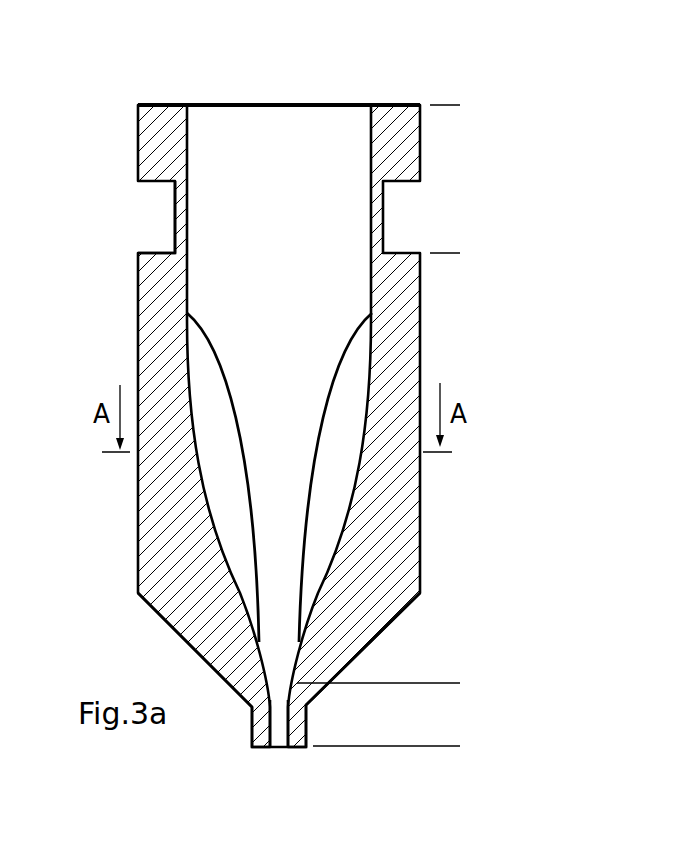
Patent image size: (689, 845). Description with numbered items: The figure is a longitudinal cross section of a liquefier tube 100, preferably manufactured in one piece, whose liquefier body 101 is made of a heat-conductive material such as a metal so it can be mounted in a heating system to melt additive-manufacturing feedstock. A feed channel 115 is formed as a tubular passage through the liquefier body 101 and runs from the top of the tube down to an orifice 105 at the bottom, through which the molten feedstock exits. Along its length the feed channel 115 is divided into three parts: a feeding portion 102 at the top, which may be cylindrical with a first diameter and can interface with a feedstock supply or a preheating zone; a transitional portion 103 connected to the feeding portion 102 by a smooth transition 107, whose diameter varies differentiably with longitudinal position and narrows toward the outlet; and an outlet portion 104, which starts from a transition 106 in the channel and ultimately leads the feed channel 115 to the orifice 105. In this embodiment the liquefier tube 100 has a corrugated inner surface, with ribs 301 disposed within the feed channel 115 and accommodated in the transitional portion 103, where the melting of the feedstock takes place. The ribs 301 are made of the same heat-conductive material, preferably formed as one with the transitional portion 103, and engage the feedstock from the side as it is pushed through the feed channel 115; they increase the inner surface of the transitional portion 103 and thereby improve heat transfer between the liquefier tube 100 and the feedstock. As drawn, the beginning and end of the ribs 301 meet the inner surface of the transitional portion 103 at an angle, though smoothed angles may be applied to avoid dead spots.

The liquefier tube 100 is at (130, 88).
The liquefier body 101 is at (162, 355).
The feeding portion 102 is at (478, 105).
The transitional portion 103 is at (478, 253).
The outlet portion 104 is at (478, 683).
The orifice 105 is at (282, 735).
The transition 106 is at (255, 712).
The smooth transition 107 is at (168, 261).
The feed channel 115 is at (349, 96).
The ribs 301 is at (323, 535).